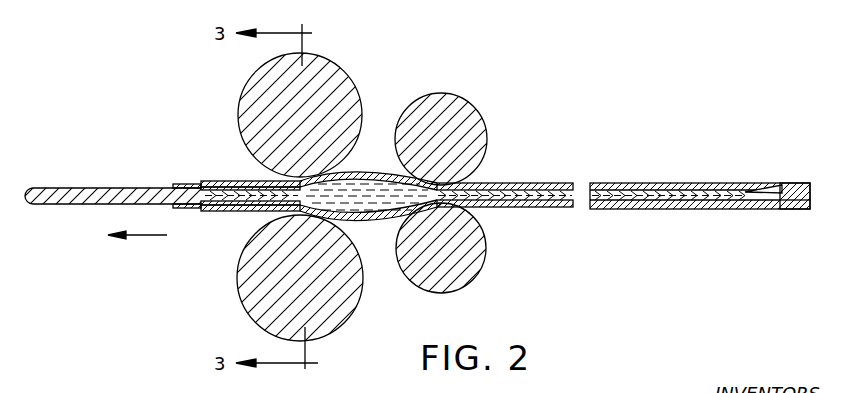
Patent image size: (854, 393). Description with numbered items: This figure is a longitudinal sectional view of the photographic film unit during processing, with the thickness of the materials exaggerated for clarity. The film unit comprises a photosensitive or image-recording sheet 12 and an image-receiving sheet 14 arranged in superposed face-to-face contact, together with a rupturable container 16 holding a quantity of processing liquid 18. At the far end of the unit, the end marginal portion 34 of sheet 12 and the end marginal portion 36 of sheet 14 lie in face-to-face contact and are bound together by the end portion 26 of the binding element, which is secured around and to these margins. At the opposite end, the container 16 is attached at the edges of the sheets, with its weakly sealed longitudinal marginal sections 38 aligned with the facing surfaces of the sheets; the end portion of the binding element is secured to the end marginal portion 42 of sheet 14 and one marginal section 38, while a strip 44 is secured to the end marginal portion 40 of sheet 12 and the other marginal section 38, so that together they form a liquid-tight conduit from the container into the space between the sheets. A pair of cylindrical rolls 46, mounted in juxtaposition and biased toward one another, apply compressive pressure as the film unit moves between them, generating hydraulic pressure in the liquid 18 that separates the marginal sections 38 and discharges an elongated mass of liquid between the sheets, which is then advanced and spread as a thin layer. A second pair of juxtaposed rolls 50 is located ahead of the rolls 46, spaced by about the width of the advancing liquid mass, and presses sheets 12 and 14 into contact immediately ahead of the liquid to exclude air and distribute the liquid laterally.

The photosensitive sheet 12 is at (536, 201).
The image-receiving sheet 14 is at (538, 190).
The rupturable container 16 is at (28, 200).
The processing liquid 18 is at (380, 186).
The end portion of binding element 26 is at (777, 168).
The end marginal portion of sheet 12 34 is at (800, 206).
The end marginal portion of sheet 14 36 is at (800, 186).
The longitudinal marginal sections of container 38 is at (178, 183).
The end marginal portion of sheet 12 40 is at (214, 212).
The end marginal portion of sheet 14 42 is at (222, 180).
The strip 44 is at (180, 209).
The cylindrical rolls 46 is at (343, 77).
The rolls 50 is at (476, 137).